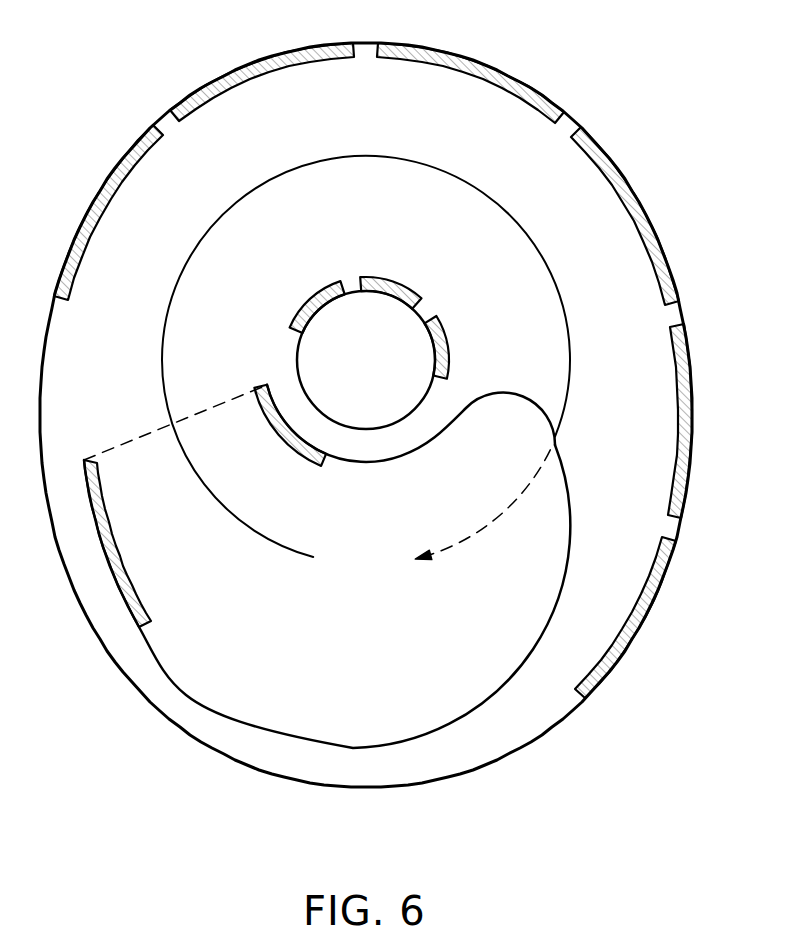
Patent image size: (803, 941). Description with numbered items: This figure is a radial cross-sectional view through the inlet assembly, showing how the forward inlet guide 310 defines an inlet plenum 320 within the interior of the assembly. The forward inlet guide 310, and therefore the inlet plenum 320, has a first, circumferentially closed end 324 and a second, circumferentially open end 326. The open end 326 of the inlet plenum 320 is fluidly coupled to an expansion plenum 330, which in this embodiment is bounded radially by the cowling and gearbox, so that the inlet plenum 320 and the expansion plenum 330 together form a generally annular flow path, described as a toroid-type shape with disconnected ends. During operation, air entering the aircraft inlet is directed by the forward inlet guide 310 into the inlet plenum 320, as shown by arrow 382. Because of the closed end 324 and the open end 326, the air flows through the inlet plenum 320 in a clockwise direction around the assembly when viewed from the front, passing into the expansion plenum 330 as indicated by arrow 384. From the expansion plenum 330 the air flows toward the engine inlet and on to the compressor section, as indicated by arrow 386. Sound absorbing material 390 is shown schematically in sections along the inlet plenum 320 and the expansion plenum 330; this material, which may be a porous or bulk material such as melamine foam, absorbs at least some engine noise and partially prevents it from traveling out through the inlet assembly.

The forward inlet guide 310 is at (457, 731).
The inlet plenum 320 is at (392, 666).
The closed end 324 is at (508, 393).
The open end 326 is at (123, 442).
The expansion plenum 330 is at (353, 128).
The arrow 382 is at (262, 537).
The arrow 384 is at (488, 195).
The arrow 386 is at (472, 533).
The sound absorbing material 390 is at (242, 85).